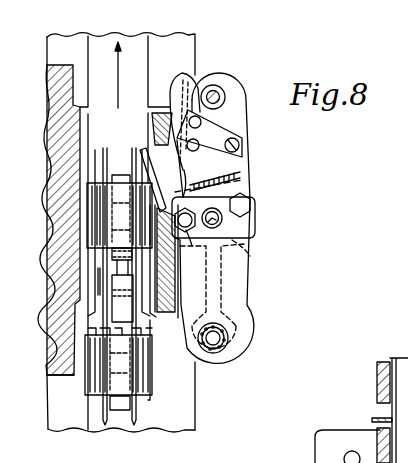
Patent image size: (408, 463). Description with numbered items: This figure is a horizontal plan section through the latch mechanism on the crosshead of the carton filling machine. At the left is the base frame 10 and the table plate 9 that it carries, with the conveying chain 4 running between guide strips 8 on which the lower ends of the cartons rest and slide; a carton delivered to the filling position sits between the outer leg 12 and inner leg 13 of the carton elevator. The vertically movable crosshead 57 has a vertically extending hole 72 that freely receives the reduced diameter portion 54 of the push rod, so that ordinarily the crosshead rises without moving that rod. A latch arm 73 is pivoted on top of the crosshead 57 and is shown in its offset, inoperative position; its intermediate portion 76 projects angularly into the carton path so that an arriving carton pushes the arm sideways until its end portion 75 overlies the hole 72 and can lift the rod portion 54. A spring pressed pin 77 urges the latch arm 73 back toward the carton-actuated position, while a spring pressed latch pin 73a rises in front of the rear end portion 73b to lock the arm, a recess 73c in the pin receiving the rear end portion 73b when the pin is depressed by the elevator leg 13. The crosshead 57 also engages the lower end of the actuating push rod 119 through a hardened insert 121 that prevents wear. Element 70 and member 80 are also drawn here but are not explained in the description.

The guide strips 8 is at (48, 43).
The base frame 10 is at (58, 247).
The outer leg 12 is at (60, 377).
The conveying chain 4 is at (122, 418).
The table plate 9 is at (145, 416).
The inner leg 13 is at (165, 322).
The latch arm 73 is at (157, 153).
The intermediate portion 76 is at (145, 168).
The crosshead 57 is at (248, 274).
The end portion 75 is at (172, 77).
The reduced diameter portion 54 is at (219, 91).
The hole 72 is at (246, 104).
The spring pressed pin 77 is at (250, 178).
The recess 73c is at (252, 197).
The spring pressed latch pin 73a is at (223, 218).
The rear end portion 73b is at (226, 225).
The arm 70 is at (201, 234).
The actuating push rod 119 is at (227, 341).
The hardened insert 121 is at (229, 331).
The bracket 80 is at (352, 451).